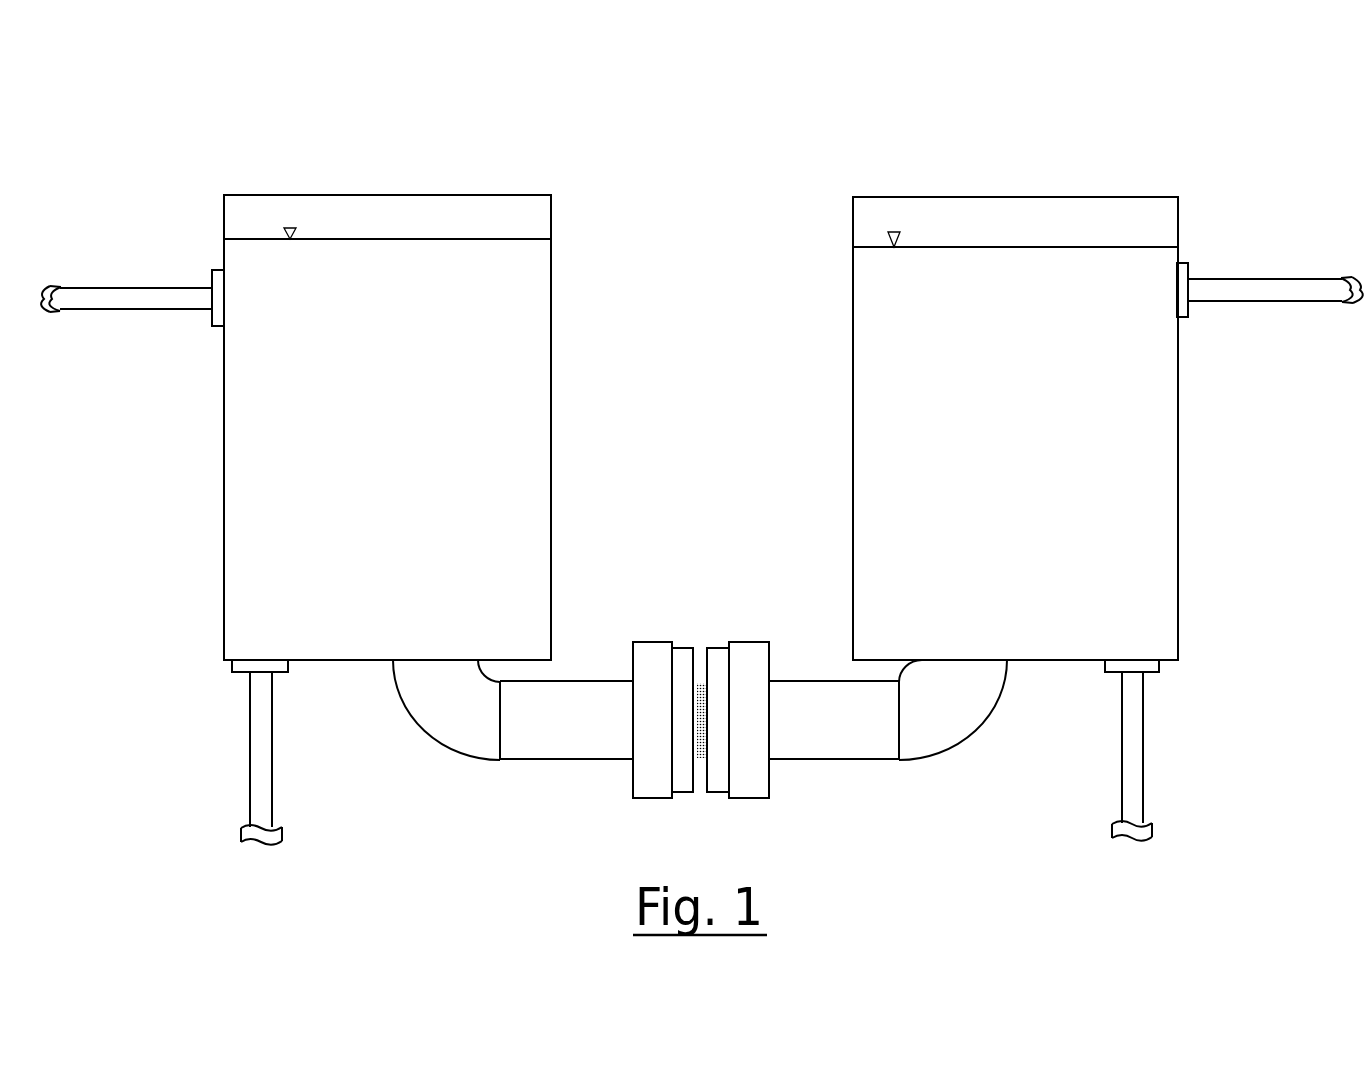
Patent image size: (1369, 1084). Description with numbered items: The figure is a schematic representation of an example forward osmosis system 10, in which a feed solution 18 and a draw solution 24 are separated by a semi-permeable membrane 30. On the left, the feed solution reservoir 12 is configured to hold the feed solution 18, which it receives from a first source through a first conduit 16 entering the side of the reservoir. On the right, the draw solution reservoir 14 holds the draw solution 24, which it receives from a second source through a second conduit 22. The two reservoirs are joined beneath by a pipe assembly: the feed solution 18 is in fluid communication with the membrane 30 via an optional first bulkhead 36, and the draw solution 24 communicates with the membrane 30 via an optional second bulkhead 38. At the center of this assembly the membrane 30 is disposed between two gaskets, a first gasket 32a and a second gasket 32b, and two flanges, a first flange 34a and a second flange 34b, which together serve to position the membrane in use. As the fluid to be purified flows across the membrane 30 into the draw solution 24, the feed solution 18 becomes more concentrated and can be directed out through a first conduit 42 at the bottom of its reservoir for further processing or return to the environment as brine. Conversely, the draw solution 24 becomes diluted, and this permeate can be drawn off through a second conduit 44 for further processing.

The forward osmosis system 10 is at (690, 104).
The feed solution reservoir 12 is at (440, 185).
The draw solution reservoir 14 is at (1035, 184).
The first conduit 16 is at (150, 287).
The feed solution 18 is at (356, 383).
The second conduit 22 is at (1280, 277).
The draw solution 24 is at (981, 375).
The semi-permeable membrane 30 is at (700, 680).
The first gasket 32a is at (683, 648).
The second gasket 32b is at (720, 648).
The first flange 34a is at (645, 642).
The second flange 34b is at (750, 642).
The first bulkhead 36 is at (447, 747).
The second bulkhead 38 is at (950, 745).
The first conduit 42 is at (250, 750).
The second conduit 44 is at (1143, 750).